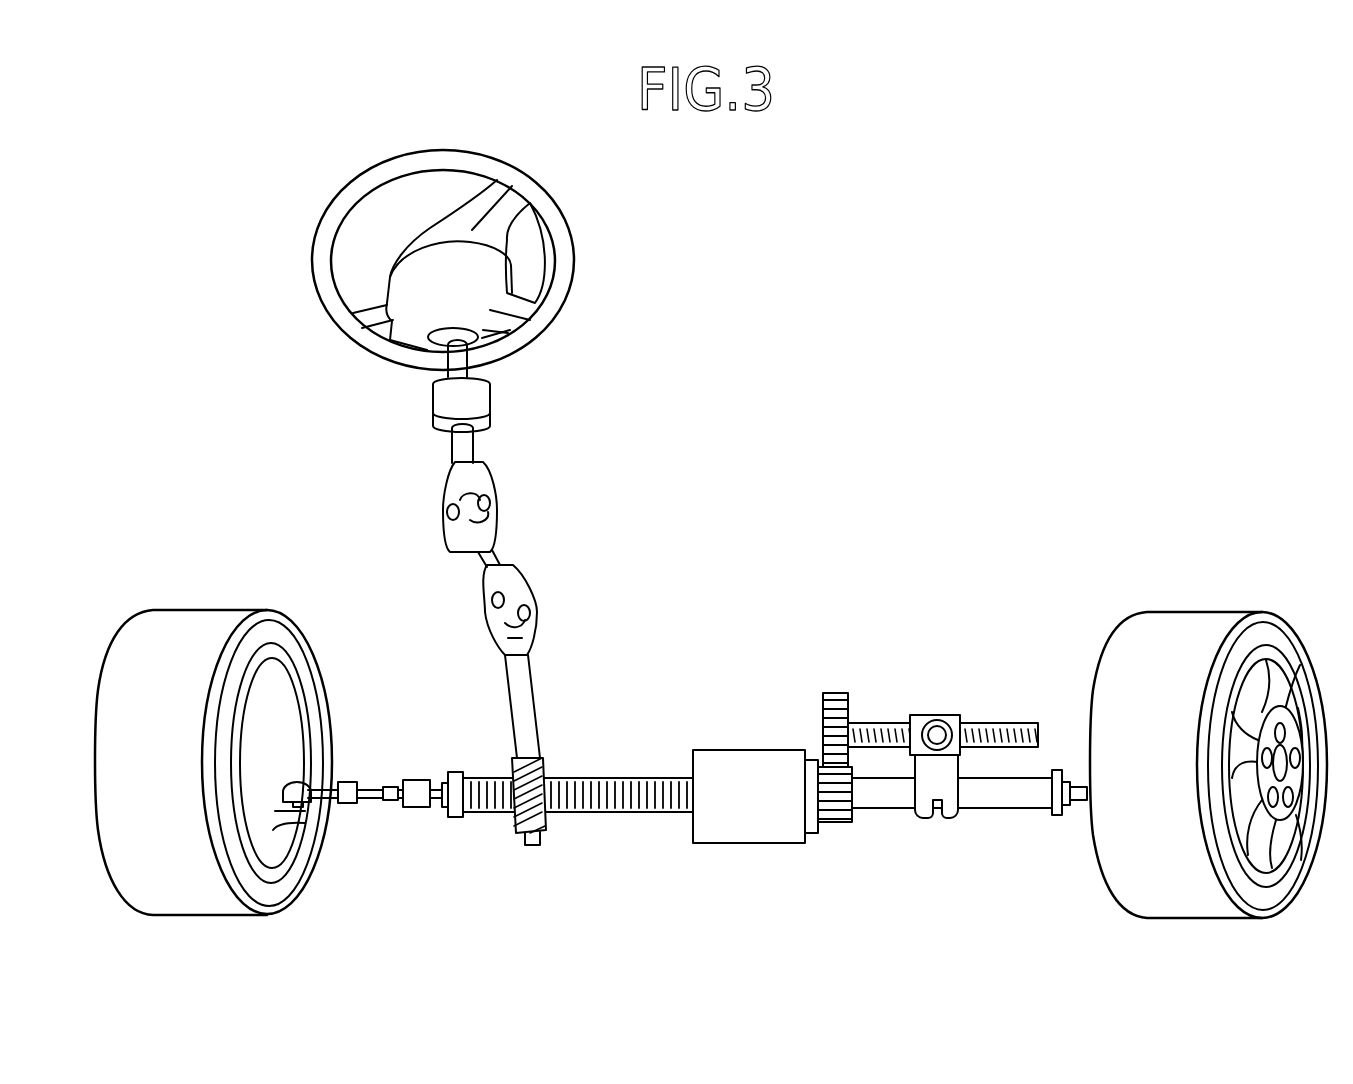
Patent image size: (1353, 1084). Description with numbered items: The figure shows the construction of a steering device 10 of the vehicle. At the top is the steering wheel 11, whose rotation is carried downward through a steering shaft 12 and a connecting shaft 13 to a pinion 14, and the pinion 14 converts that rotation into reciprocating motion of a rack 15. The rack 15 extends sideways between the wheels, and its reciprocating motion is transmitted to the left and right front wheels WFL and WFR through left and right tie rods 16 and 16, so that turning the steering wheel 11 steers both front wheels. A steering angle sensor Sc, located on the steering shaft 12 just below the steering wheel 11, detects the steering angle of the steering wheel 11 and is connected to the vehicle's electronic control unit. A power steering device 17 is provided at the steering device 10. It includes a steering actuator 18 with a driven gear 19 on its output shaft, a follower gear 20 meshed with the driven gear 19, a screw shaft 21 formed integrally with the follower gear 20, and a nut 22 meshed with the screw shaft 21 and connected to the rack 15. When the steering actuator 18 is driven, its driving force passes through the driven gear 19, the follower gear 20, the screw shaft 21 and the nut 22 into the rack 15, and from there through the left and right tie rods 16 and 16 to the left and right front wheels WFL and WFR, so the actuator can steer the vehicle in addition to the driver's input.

The steering device 10 is at (350, 456).
The steering wheel 11 is at (560, 232).
The steering angle sensor Sc is at (442, 398).
The steering shaft 12 is at (450, 447).
The connecting shaft 13 is at (490, 566).
The pinion 14 is at (522, 820).
The rack 15 is at (623, 800).
The tie rod 16 is at (367, 797).
The power steering device 17 is at (726, 845).
The steering actuator 18 is at (778, 823).
The driven gear 19 is at (842, 817).
The follower gear 20 is at (837, 702).
The screw shaft 21 is at (1005, 727).
The nut 22 is at (920, 720).
The right front wheel WFR is at (202, 617).
The left front wheel WFL is at (1185, 623).